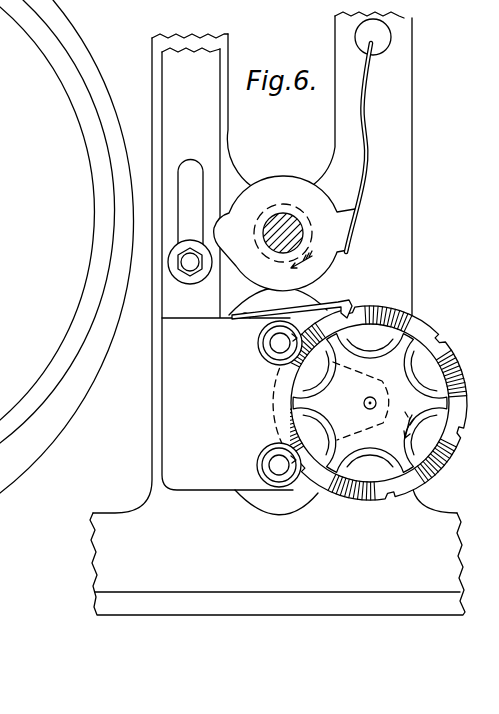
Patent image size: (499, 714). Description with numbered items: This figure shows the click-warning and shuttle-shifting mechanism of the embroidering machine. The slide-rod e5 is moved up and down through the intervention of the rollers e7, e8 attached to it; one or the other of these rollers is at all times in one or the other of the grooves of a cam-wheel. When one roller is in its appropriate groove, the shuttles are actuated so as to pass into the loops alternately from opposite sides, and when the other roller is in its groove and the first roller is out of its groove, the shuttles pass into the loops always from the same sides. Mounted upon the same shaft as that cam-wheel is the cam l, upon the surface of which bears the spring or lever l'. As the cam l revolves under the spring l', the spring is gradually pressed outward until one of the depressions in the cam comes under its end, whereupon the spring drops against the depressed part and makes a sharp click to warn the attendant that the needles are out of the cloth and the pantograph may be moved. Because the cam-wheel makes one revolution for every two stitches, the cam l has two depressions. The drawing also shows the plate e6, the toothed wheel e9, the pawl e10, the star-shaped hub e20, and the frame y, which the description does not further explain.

The slide-rod e5 is at (191, 183).
The plate e6 is at (227, 404).
The roller e7 is at (258, 348).
The roller e8 is at (261, 463).
The ratchet wheel e9 is at (383, 403).
The pawl e10 is at (301, 299).
The spider hub e20 is at (370, 403).
The cam l is at (284, 233).
The spring or lever l' is at (366, 147).
The frame bracket y is at (277, 313).